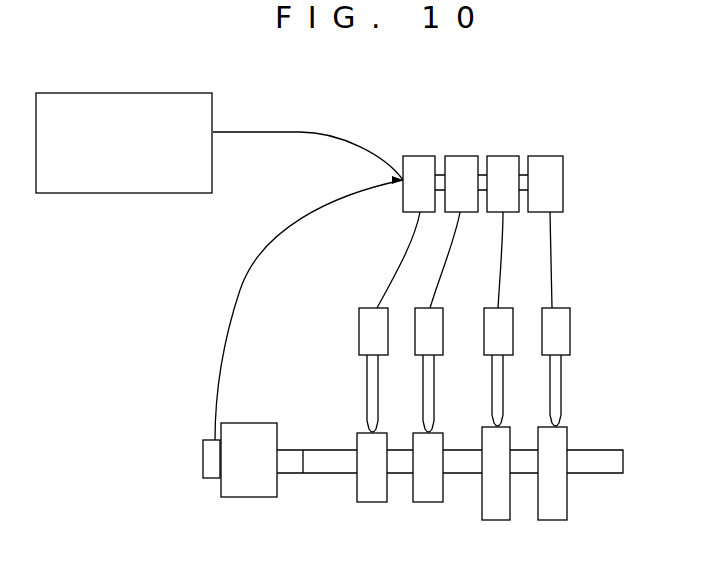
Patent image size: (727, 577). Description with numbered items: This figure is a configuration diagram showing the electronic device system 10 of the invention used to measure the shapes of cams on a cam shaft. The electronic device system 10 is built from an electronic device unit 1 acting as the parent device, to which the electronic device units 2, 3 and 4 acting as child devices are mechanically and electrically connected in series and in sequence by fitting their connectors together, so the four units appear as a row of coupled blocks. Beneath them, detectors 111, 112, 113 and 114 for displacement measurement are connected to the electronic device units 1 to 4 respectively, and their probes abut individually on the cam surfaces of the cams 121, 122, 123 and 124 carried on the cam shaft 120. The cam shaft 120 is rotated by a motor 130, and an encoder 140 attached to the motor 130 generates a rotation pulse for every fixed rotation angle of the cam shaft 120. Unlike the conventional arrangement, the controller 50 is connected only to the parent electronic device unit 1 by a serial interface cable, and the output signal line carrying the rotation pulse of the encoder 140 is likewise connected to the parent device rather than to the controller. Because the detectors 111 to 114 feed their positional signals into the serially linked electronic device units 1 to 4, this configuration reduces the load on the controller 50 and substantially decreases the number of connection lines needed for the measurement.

The electronic device unit 1 is at (420, 156).
The electronic device unit 2 is at (462, 156).
The electronic device unit 3 is at (505, 156).
The electronic device unit 4 is at (548, 156).
The electronic device system 10 is at (523, 147).
The controller 50 is at (117, 193).
The detector 111 is at (359, 333).
The detector 112 is at (443, 325).
The detector 113 is at (513, 325).
The detector 114 is at (570, 325).
The cam shaft 120 is at (598, 468).
The cam 121 is at (361, 433).
The cam 122 is at (422, 432).
The cam 123 is at (487, 426).
The cam 124 is at (560, 425).
The motor 130 is at (252, 492).
The encoder 140 is at (212, 470).